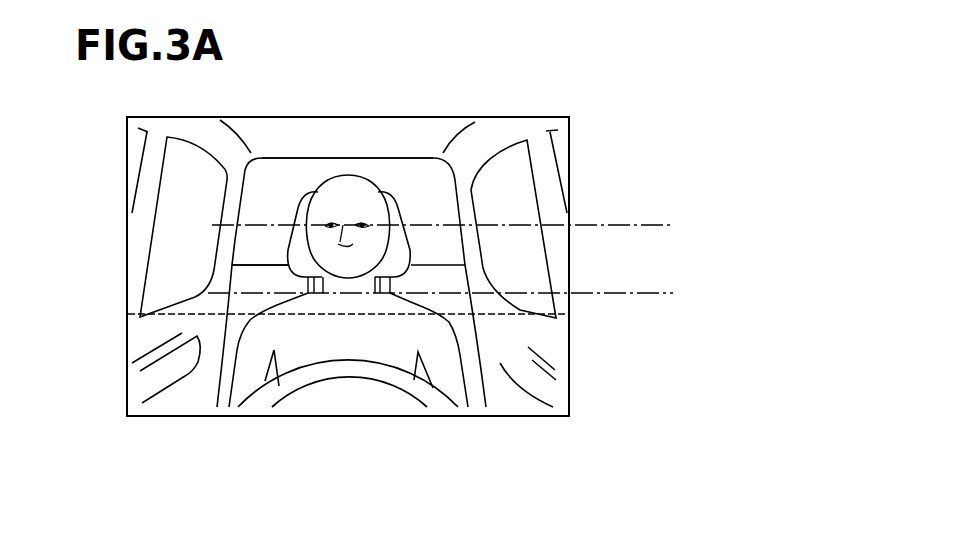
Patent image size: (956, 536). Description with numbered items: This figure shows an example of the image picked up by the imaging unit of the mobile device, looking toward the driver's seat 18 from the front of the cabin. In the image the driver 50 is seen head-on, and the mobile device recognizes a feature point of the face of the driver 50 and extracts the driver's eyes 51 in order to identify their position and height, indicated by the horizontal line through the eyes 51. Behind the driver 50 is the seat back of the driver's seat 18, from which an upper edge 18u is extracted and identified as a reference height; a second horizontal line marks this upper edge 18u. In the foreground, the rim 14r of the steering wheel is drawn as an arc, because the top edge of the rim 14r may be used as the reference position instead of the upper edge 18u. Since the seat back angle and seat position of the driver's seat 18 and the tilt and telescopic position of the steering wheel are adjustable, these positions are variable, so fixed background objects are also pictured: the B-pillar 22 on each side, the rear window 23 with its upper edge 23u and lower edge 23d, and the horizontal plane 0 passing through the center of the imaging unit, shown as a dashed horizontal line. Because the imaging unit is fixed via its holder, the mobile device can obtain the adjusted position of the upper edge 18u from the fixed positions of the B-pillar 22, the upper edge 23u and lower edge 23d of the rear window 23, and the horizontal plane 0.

The B-pillar 22 is at (143, 183).
The rear window 23 is at (410, 185).
The upper edge of rear window 23u is at (276, 158).
The lower edge of rear window 23d is at (240, 265).
The driver 50 is at (348, 183).
The driver's eyes 51 is at (460, 228).
The driver's seat 18 is at (465, 345).
The upper edge of the seat back 18u is at (466, 298).
The rim of the steering wheel 14r is at (352, 366).
The horizontal plane 0 is at (527, 317).